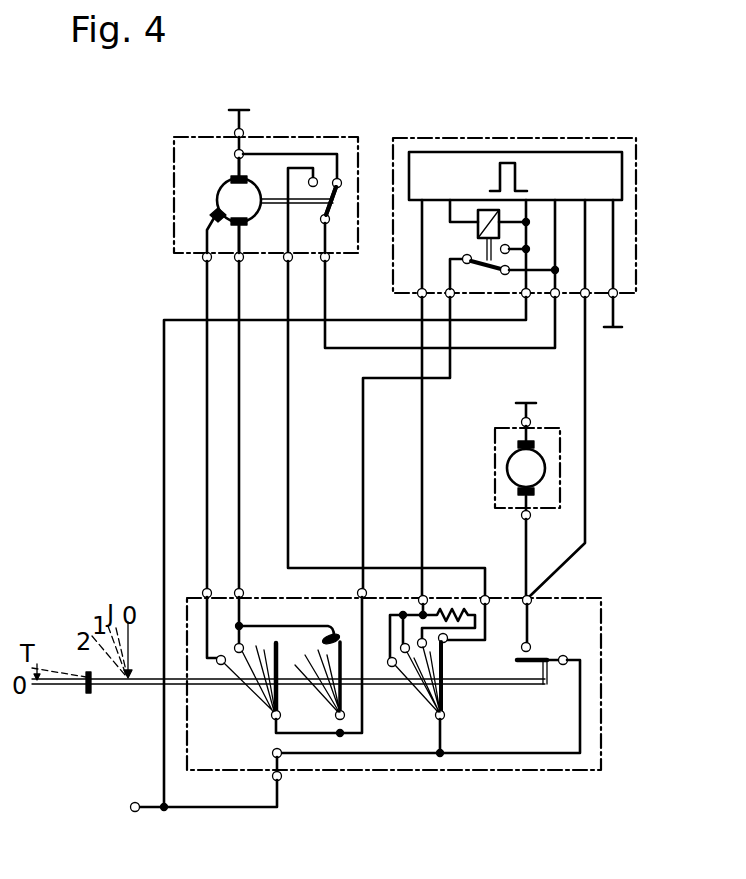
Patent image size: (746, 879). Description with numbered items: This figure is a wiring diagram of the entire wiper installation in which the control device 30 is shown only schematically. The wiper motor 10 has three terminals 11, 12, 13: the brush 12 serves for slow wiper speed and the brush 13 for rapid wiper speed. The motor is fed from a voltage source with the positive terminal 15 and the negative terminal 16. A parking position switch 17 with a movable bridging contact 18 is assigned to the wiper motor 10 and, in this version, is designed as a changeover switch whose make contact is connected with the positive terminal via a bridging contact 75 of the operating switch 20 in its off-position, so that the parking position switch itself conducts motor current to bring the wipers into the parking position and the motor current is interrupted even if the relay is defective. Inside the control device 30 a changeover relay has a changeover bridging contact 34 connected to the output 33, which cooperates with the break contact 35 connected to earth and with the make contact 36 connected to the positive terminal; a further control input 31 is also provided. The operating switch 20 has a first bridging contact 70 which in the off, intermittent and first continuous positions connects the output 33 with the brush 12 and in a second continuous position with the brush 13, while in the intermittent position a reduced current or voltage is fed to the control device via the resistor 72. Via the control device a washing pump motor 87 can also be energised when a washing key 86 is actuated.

The wiper motor 10 is at (266, 186).
The terminal 11 is at (212, 159).
The brush 12 is at (263, 238).
The brush 13 is at (205, 227).
The positive terminal 15 is at (203, 808).
The negative terminal 16 is at (632, 328).
The parking position switch 17 is at (359, 219).
The movable bridging contact 18 is at (342, 216).
The operating switch 20 is at (394, 706).
The control device 30 is at (537, 218).
The control input 31 is at (474, 315).
The output 33 is at (426, 445).
The changeover bridging contact 34 is at (466, 261).
The break contact 35 is at (526, 309).
The make contact 36 is at (544, 242).
The first bridging contact 70 is at (284, 667).
The resistor 72 is at (432, 598).
The bridging contact 75 is at (447, 678).
The washer pump switch 86 is at (430, 680).
The washing pump motor 87 is at (506, 499).